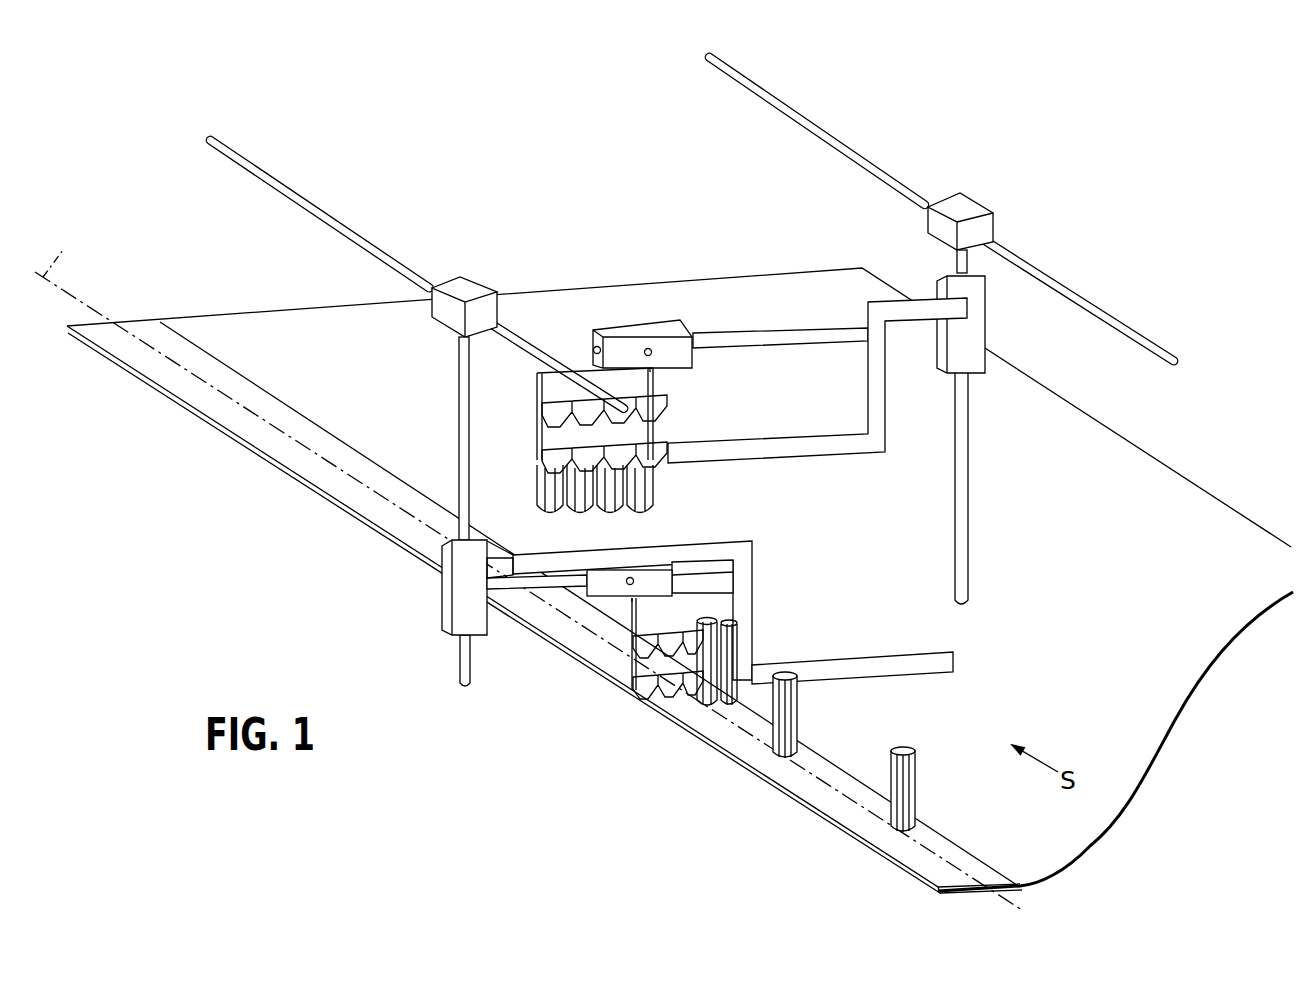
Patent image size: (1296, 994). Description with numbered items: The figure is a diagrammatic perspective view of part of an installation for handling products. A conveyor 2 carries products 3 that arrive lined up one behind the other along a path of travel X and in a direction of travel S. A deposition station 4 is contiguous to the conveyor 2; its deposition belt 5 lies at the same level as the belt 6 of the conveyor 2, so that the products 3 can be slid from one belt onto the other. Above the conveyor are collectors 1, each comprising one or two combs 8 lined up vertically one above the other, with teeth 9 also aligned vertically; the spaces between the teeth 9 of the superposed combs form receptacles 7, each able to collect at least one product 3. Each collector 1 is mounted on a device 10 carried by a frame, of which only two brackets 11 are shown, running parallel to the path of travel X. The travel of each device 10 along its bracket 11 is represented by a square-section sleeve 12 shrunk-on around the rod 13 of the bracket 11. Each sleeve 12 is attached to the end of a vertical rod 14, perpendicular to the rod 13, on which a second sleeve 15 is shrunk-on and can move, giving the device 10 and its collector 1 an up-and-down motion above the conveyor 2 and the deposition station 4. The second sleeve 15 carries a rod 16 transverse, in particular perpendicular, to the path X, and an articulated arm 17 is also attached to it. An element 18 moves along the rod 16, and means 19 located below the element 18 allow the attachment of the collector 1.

The collector 1 is at (578, 348).
The conveyor 2 is at (232, 412).
The products 3 is at (790, 712).
The deposition station 4 is at (1020, 690).
The deposition belt 5 is at (1022, 544).
The belt 6 is at (272, 408).
The receptacles 7 is at (547, 403).
The combs 8 is at (548, 433).
The teeth 9 is at (664, 406).
The device 10 is at (435, 640).
The brackets 11 is at (355, 212).
The sleeve 12 is at (468, 285).
The rod 13 is at (398, 254).
The vertical rod 14 is at (458, 372).
The second sleeve 15 is at (447, 604).
The rod 16 is at (787, 333).
The articulated arm 17 is at (788, 437).
The element 18 is at (672, 331).
The means 19 is at (676, 378).